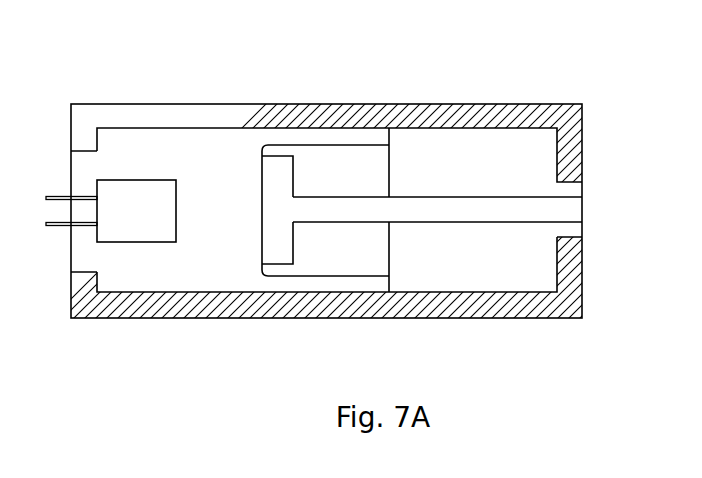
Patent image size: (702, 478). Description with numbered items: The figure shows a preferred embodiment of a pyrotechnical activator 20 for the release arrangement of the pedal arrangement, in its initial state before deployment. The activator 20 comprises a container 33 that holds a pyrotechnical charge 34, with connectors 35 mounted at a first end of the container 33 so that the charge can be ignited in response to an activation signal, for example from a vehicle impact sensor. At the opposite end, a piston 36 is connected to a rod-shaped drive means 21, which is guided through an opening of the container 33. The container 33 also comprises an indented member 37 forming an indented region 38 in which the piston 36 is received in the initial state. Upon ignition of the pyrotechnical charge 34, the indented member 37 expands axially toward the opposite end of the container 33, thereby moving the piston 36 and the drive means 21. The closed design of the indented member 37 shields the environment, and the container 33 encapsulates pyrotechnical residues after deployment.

The pyrotechnical activator 20 is at (90, 30).
The drive means 21 is at (496, 208).
The container 33 is at (158, 114).
The pyrotechnical charge 34 is at (137, 210).
The connectors 35 is at (67, 196).
The piston 36 is at (278, 250).
The indented member 37 is at (284, 146).
The indented region 38 is at (335, 167).